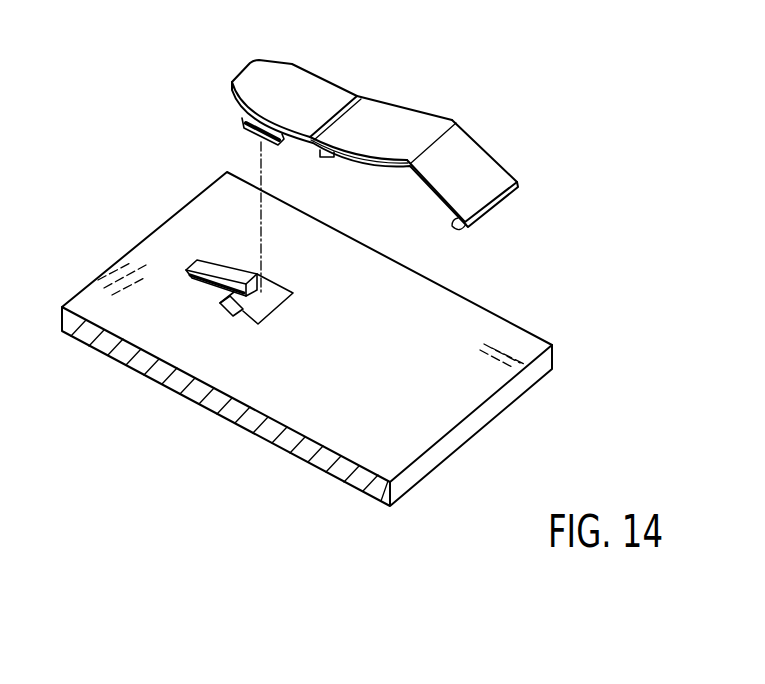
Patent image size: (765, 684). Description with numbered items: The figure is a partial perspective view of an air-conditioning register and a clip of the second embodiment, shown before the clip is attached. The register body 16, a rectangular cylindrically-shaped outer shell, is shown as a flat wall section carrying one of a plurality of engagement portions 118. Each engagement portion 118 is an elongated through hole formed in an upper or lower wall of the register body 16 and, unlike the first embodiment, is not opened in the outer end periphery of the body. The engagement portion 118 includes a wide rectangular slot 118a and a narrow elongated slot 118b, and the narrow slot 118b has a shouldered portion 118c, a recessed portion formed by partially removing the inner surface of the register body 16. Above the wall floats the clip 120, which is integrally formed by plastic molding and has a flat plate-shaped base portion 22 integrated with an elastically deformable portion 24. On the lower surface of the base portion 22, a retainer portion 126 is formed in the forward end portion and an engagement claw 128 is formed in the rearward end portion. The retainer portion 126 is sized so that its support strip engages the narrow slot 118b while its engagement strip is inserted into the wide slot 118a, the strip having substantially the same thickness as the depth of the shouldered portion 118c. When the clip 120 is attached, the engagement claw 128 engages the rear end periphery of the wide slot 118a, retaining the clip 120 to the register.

The register body 16 is at (480, 333).
The base portion 22 is at (287, 87).
The elastically deformable portion 24 is at (462, 155).
The engagement portion 118 is at (251, 317).
The wide rectangular slot 118a is at (250, 313).
The narrow elongated slot 118b is at (215, 272).
The shouldered portion 118c is at (232, 310).
The clip 120 is at (336, 117).
The retainer portion 126 is at (247, 135).
The engagement claw 128 is at (319, 157).